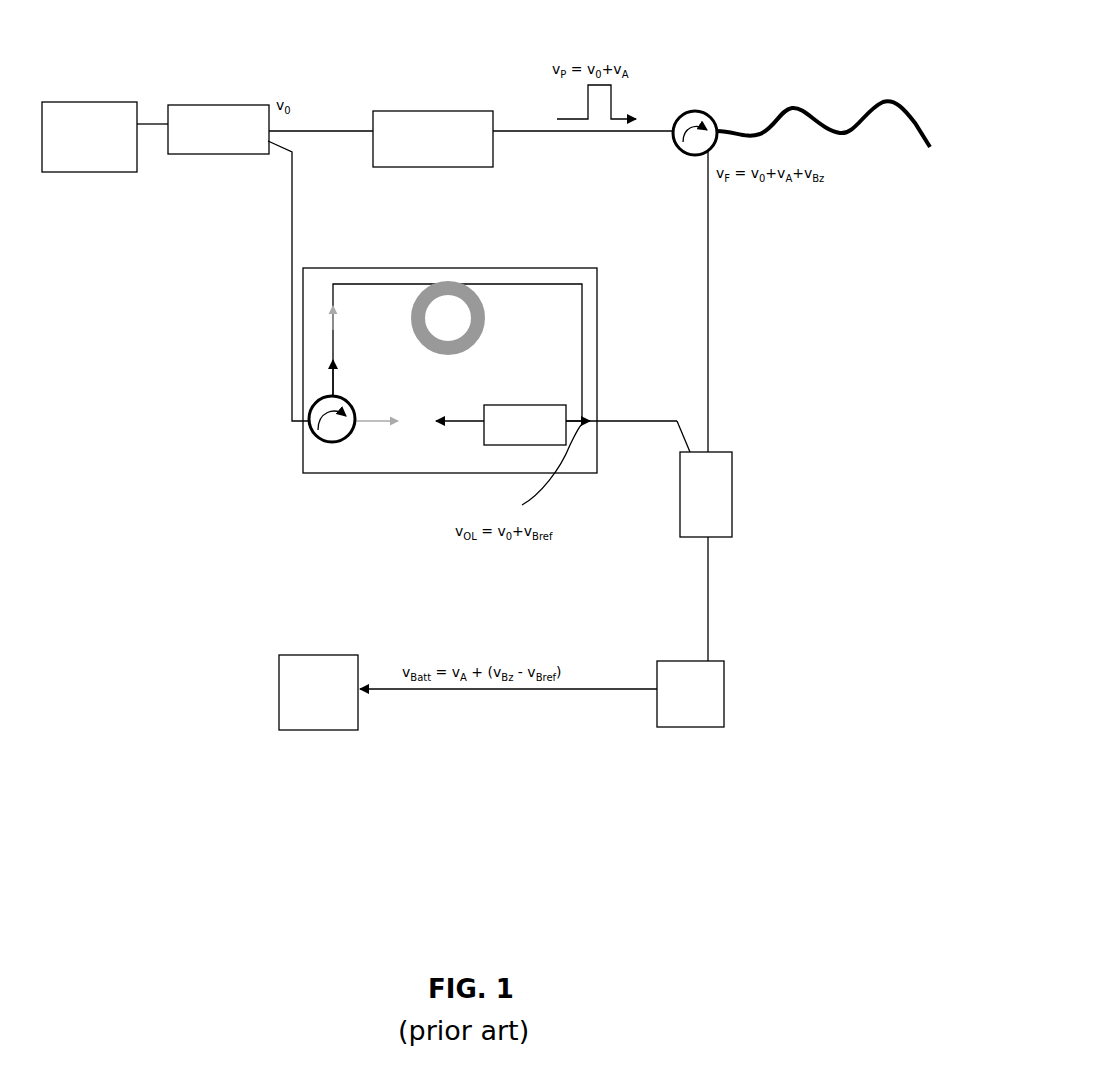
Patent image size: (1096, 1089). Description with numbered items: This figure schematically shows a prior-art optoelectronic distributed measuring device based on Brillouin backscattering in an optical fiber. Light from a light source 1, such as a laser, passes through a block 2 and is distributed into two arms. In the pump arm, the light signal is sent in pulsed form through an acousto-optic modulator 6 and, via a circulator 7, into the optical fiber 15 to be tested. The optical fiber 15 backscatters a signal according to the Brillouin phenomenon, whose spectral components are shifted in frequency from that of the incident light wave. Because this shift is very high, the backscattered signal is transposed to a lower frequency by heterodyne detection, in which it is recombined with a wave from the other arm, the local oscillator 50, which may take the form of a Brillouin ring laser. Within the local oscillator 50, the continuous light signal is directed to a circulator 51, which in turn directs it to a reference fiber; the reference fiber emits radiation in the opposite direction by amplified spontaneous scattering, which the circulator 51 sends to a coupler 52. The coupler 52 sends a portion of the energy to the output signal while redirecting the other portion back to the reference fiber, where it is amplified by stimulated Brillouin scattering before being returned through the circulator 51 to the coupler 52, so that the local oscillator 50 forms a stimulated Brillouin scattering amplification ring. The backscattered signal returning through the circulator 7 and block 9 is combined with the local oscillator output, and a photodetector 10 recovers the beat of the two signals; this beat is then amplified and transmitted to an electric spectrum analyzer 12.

The light source 1 is at (89, 137).
The modulator 2 is at (218, 129).
The acousto-optic modulator 6 is at (433, 139).
The optical circulator 7 is at (678, 110).
The optical fiber 15 is at (776, 108).
The local oscillator 50 is at (405, 267).
The circulator 51 is at (338, 443).
The coupler 52 is at (525, 425).
The optical receiver 9 is at (706, 494).
The photodetector 10 is at (690, 694).
The electric spectrum analyzer 12 is at (318, 692).